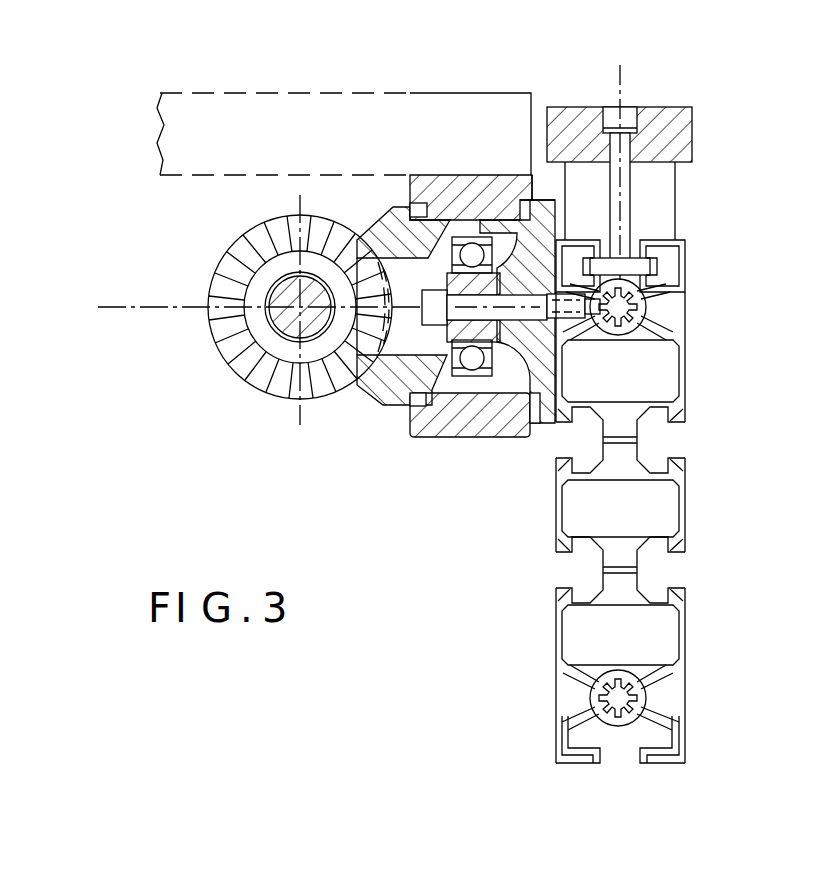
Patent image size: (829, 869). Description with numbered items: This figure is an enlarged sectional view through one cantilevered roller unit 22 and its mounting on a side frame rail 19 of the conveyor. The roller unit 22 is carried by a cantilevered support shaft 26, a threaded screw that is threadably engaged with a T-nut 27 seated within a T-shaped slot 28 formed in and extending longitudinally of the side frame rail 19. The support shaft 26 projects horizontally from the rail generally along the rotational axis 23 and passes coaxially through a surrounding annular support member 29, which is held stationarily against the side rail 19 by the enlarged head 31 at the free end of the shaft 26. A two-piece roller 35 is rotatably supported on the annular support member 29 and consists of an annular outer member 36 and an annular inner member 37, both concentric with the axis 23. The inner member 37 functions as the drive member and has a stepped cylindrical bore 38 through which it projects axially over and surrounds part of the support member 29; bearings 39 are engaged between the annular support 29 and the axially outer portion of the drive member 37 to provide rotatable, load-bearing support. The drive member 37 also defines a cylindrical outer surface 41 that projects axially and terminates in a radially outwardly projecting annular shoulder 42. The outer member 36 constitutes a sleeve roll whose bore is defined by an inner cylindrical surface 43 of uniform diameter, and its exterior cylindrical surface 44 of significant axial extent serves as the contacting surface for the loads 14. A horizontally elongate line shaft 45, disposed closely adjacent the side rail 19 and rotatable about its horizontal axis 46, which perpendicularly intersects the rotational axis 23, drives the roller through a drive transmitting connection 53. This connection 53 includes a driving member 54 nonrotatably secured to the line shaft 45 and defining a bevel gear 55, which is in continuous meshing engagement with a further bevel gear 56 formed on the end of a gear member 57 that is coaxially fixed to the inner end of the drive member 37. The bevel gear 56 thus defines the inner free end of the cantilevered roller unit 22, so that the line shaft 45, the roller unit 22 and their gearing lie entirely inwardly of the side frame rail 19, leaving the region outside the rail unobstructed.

The loads 14 is at (226, 110).
The side frame rail 19 is at (687, 463).
The cantilevered roller unit 22 is at (428, 470).
The rotational axis 23 is at (120, 307).
The cantilevered support shaft 26 is at (527, 318).
The T-nut 27 is at (650, 297).
The T-shaped slot 28 is at (578, 338).
The annular support member 29 is at (548, 237).
The enlarged head 31 is at (368, 378).
The two-piece roller 35 is at (457, 172).
The outer member 36 is at (487, 192).
The inner member 37 is at (443, 175).
The stepped cylindrical bore 38 is at (472, 370).
The bearings 39 is at (425, 437).
The cylindrical outer surface 41 is at (525, 215).
The annular shoulder 42 is at (412, 412).
The inner cylindrical surface 43 is at (465, 205).
The exterior cylindrical surface 44 is at (518, 438).
The line shaft 45 is at (283, 298).
The line shaft axis 46 is at (290, 318).
The drive transmitting connection 53 is at (318, 188).
The driving member 54 is at (285, 352).
The bevel gear 55 is at (248, 248).
The bevel gear 56 is at (364, 222).
The gear member 57 is at (405, 218).